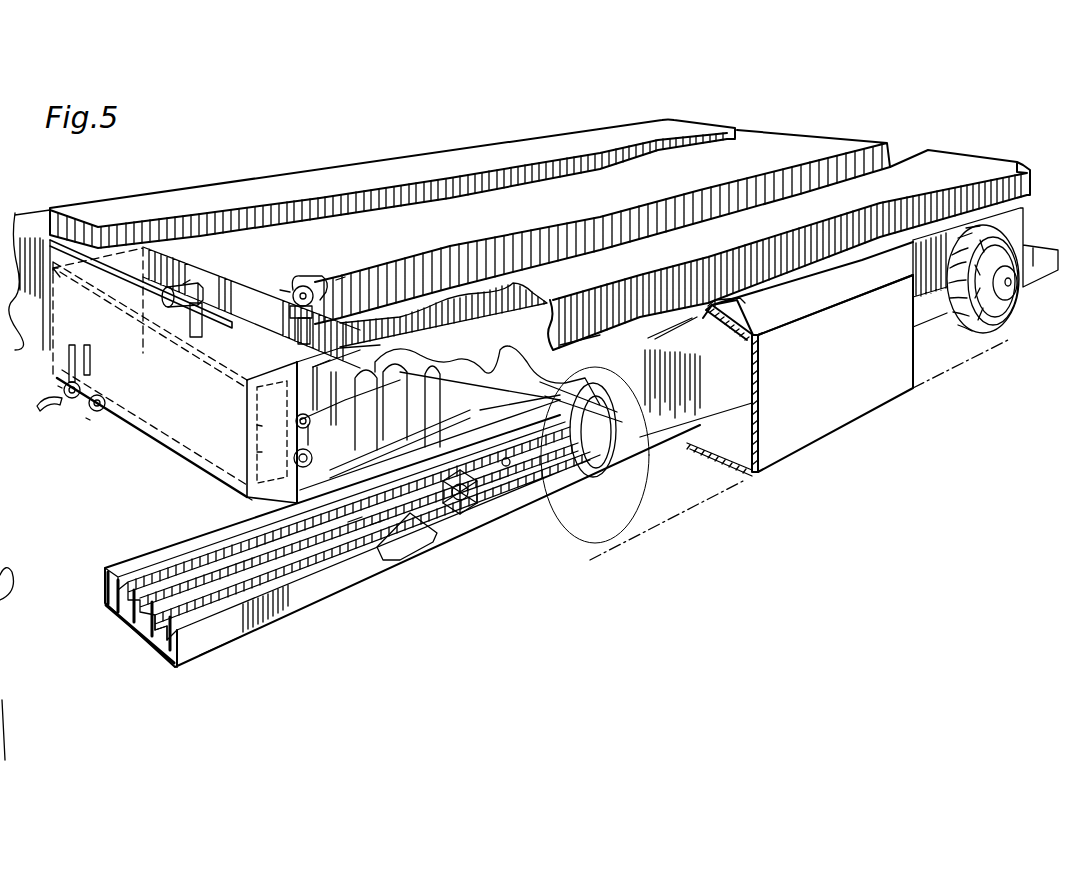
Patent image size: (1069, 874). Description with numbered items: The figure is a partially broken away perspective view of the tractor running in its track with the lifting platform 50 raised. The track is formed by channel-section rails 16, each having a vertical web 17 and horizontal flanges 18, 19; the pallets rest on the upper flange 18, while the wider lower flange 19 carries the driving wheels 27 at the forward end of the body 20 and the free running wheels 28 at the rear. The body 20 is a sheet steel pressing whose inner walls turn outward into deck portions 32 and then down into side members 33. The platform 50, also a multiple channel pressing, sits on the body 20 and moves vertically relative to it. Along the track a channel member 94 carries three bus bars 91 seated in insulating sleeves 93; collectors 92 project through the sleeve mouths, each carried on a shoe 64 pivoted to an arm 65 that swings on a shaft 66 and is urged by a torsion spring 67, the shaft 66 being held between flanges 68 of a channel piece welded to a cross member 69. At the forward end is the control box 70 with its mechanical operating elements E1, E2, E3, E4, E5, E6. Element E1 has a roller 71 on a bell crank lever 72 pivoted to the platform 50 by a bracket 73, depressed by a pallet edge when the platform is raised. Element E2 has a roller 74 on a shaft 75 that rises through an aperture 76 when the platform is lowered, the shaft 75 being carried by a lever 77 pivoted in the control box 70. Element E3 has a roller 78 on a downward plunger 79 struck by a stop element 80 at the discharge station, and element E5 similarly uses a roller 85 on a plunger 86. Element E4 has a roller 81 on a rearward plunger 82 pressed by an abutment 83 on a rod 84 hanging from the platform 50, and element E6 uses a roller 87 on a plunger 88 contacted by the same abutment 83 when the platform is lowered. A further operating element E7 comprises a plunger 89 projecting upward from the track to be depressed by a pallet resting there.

The rail 16 is at (776, 359).
The web 17 is at (835, 373).
The upper flange 18 is at (808, 288).
The lower flange 19 is at (696, 439).
The body 20 is at (677, 432).
The driving wheel 27 is at (623, 517).
The free running wheel 28 is at (1003, 303).
The deck portion 32 is at (581, 352).
The side member 33 is at (698, 407).
The lifting platform 50 is at (760, 128).
The shoe 64 is at (585, 478).
The arm 65 is at (472, 390).
The shaft 66 is at (402, 540).
The torsion spring 67 is at (378, 530).
The flange 68 is at (452, 514).
The cross member 69 is at (355, 525).
The control box 70 is at (124, 418).
The roller 71 is at (148, 299).
The bell crank lever 72 is at (206, 330).
The bracket 73 is at (213, 282).
The roller 74 is at (340, 278).
The shaft 75 is at (290, 315).
The aperture 76 is at (301, 275).
The lever 77 is at (296, 340).
The roller 78 is at (72, 345).
The plunger 79 is at (88, 347).
The stop element 80 is at (50, 412).
The roller 81 is at (288, 382).
The plunger 82 is at (296, 422).
The abutment 83 is at (318, 410).
The rod 84 is at (320, 388).
The roller 85 is at (102, 398).
The plunger 86 is at (78, 386).
The roller 87 is at (295, 462).
The plunger 88 is at (258, 452).
The plunger 89 is at (659, 339).
The bus bar 91 is at (162, 646).
The collector 92 is at (500, 470).
The insulating sleeve 93 is at (177, 633).
The channel member 94 is at (220, 648).
The operating element E1 is at (192, 276).
The operating element E2 is at (279, 289).
The operating element E3 is at (53, 390).
The operating element E4 is at (256, 426).
The operating element E5 is at (88, 428).
The operating element E6 is at (246, 504).
The operating element E7 is at (740, 315).